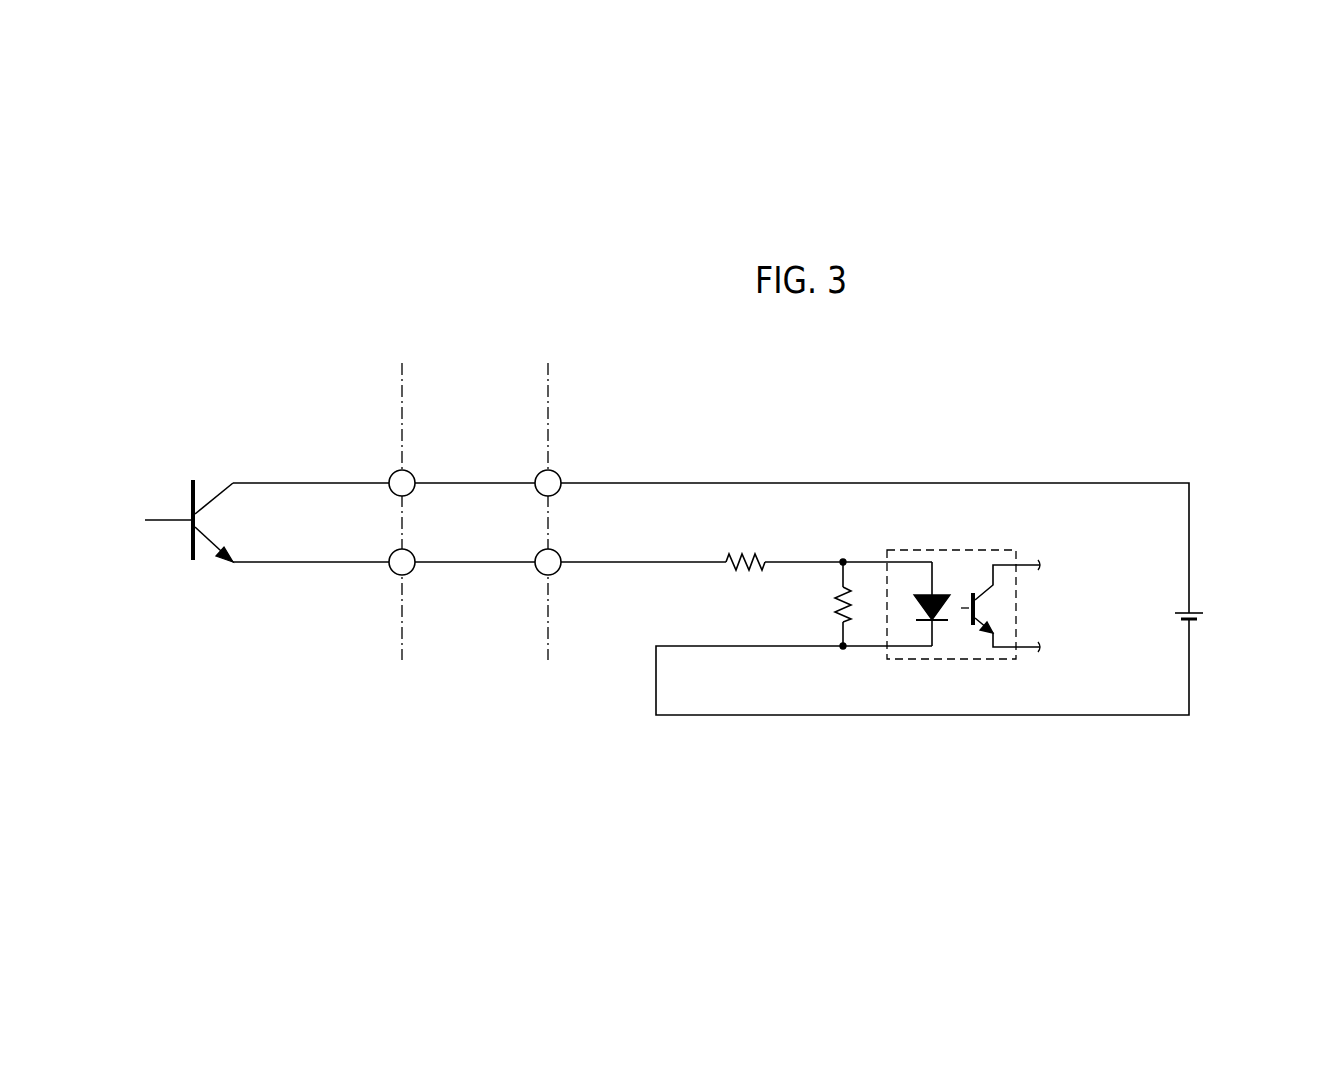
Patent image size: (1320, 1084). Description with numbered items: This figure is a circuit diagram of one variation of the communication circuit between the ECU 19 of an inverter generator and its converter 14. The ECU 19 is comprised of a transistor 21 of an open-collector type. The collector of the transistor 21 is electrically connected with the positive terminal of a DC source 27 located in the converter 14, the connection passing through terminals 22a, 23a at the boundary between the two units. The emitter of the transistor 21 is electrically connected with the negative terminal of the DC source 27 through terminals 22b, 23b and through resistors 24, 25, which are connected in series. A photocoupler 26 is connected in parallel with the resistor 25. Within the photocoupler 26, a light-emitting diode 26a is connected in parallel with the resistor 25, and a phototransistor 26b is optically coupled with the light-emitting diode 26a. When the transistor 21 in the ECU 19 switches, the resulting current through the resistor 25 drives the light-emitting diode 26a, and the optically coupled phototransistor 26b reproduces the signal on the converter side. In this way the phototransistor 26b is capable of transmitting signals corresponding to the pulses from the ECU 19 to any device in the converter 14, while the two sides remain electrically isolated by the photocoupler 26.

The converter 14 is at (715, 385).
The ECU 19 is at (402, 385).
The transistor 21 is at (184, 502).
The terminal 22a is at (366, 461).
The terminal 22b is at (366, 541).
The terminal 23a is at (512, 461).
The terminal 23b is at (512, 541).
The resistor 24 is at (754, 535).
The resistor 25 is at (806, 604).
The photocoupler 26 is at (964, 612).
The light-emitting diode 26a is at (938, 637).
The phototransistor 26b is at (1000, 636).
The DC source 27 is at (1228, 617).